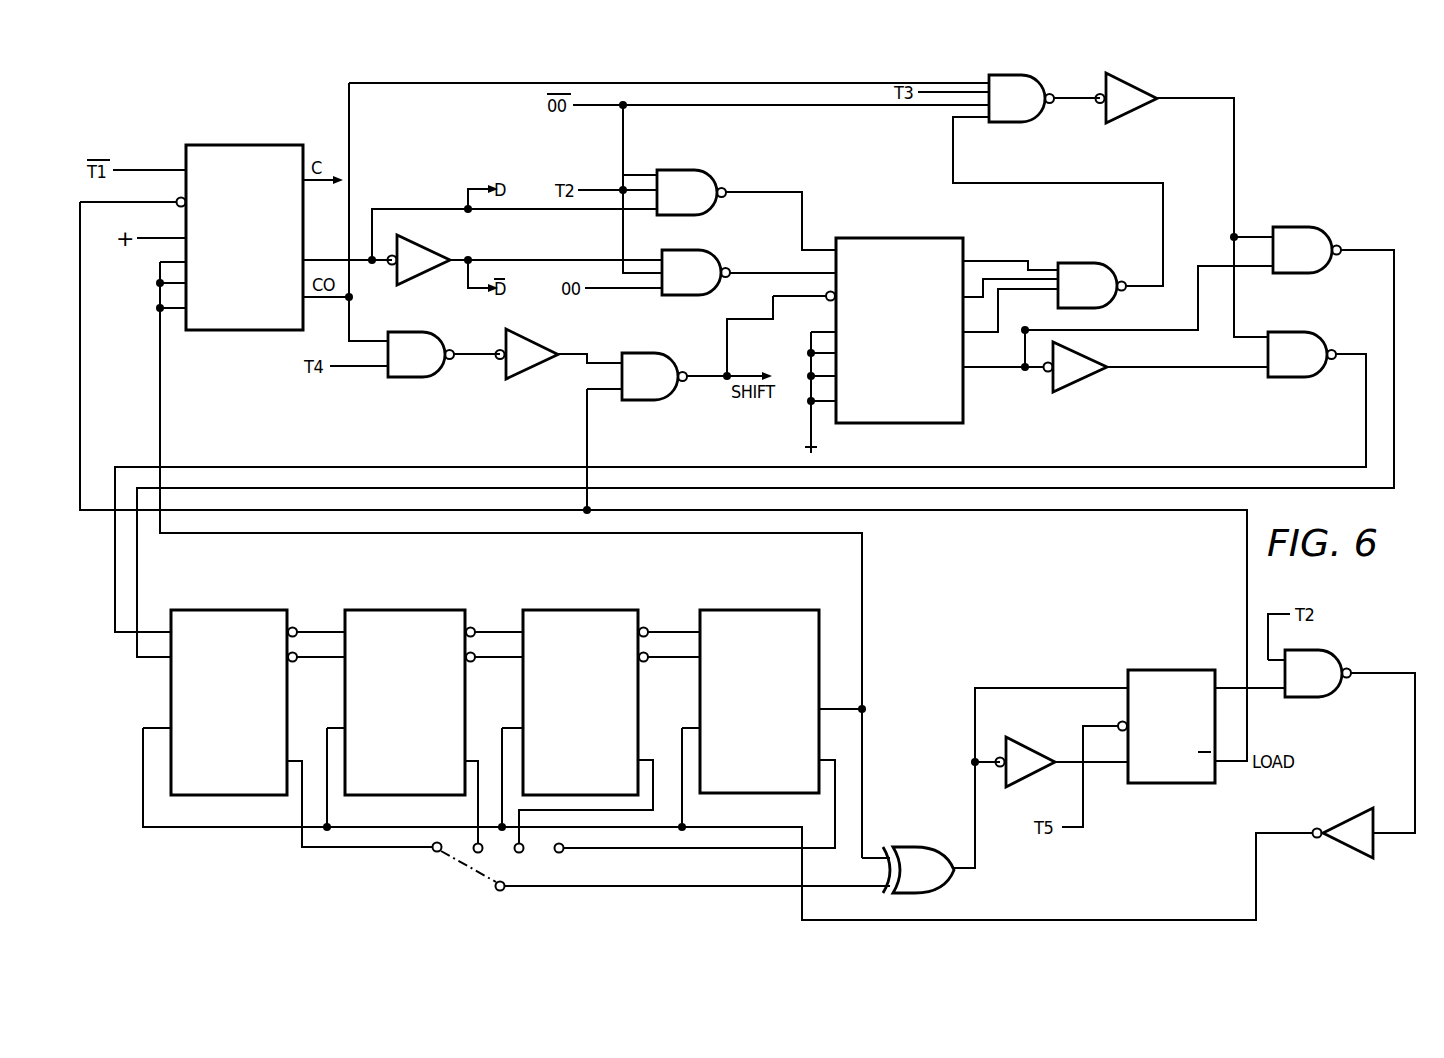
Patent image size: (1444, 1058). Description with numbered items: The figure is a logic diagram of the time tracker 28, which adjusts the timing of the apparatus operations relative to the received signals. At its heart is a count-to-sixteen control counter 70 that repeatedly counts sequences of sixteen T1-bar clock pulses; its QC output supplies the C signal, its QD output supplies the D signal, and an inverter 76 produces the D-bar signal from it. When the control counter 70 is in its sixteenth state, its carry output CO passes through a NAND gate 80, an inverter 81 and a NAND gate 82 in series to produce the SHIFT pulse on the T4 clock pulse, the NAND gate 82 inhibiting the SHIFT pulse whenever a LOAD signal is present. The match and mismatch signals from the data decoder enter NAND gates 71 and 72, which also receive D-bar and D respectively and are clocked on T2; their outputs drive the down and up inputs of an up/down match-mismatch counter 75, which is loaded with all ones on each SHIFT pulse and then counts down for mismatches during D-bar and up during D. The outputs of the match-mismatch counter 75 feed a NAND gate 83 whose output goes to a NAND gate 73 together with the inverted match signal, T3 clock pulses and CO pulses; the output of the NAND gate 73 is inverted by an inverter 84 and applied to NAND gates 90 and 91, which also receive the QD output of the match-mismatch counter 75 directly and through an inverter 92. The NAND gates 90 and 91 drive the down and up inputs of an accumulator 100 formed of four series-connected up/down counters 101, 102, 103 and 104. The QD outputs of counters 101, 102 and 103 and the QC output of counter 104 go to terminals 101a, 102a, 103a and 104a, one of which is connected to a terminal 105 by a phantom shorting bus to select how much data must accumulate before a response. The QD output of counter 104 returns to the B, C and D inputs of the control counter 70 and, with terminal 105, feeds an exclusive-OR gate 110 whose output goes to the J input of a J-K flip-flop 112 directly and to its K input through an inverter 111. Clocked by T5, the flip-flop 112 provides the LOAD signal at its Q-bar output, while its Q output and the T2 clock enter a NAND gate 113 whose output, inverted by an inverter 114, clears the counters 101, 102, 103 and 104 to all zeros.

The time tracker 28 is at (1288, 183).
The control counter 70 is at (226, 332).
The NAND gate 71 is at (697, 250).
The NAND gate 72 is at (692, 170).
The NAND gate 73 is at (1015, 122).
The match-mismatch counter 75 is at (906, 238).
The inverter 76 is at (412, 243).
The NAND gate 80 is at (406, 332).
The inverter 81 is at (520, 333).
The NAND gate 82 is at (648, 353).
The NAND gate 83 is at (1072, 263).
The inverter 84 is at (1126, 123).
The NAND gate 90 is at (1290, 227).
The NAND gate 91 is at (1292, 332).
The inverter 92 is at (1080, 382).
The accumulator 100 is at (486, 869).
The up/down counter 101 is at (244, 610).
The up/down counter 102 is at (424, 610).
The up/down counter 103 is at (592, 610).
The up/down counter 104 is at (772, 610).
The terminal 101a is at (434, 852).
The terminal 102a is at (474, 843).
The terminal 103a is at (518, 853).
The terminal 104a is at (565, 852).
The terminal 105 is at (503, 893).
The exclusive-OR gate 110 is at (922, 847).
The inverter 111 is at (1032, 750).
The J-K flip-flop 112 is at (1175, 670).
The NAND gate 113 is at (1325, 650).
The inverter 114 is at (1350, 808).